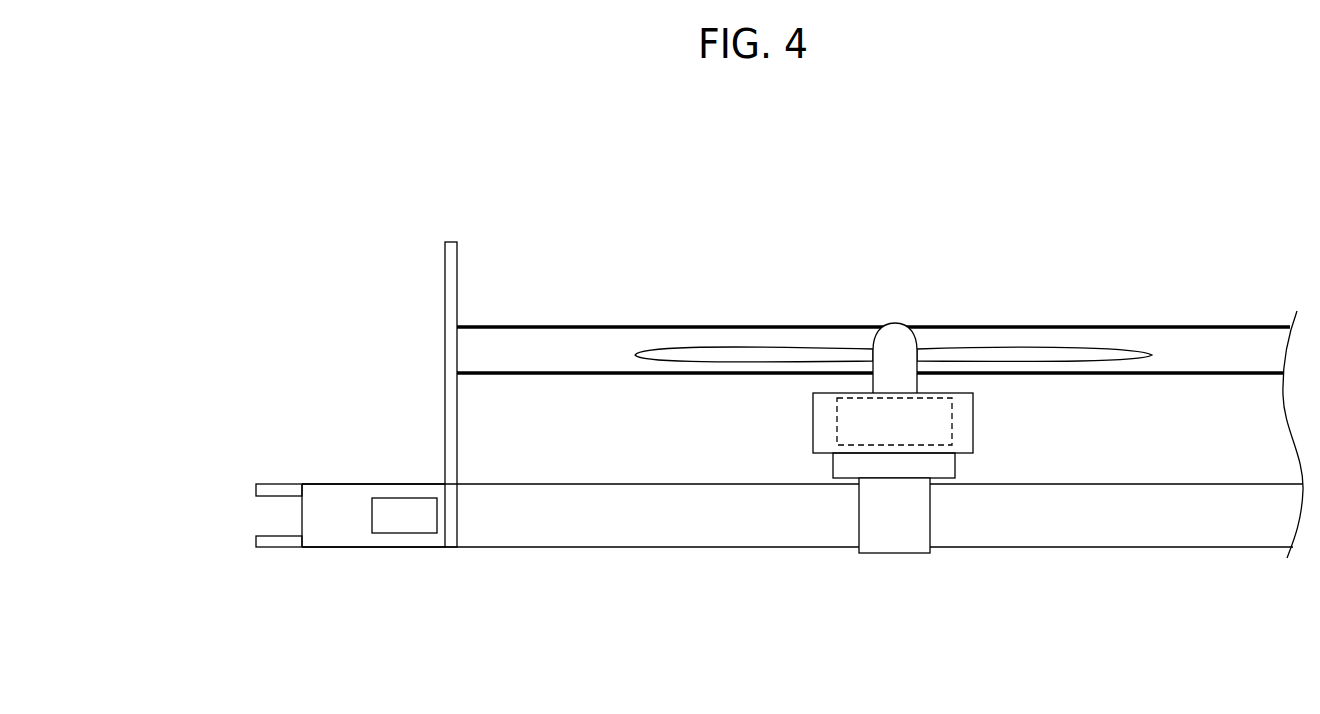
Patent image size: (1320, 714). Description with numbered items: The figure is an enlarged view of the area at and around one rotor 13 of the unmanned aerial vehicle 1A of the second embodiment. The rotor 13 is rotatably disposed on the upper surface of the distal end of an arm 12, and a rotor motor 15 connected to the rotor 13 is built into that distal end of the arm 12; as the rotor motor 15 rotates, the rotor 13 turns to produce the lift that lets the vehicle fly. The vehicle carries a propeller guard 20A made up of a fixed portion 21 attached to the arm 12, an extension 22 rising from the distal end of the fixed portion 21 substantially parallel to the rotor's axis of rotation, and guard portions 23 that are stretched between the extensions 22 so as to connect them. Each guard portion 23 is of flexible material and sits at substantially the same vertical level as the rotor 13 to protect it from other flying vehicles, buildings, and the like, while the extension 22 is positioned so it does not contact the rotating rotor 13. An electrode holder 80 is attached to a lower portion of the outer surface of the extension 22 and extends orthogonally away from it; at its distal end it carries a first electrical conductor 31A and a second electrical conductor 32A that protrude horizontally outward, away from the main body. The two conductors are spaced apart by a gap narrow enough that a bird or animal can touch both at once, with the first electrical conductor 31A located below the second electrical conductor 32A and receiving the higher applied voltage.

The unmanned aerial vehicle 1A is at (1153, 160).
The propeller guard 20A is at (426, 272).
The extension 22 is at (452, 404).
The guard portion 23 is at (520, 342).
The rotor 13 is at (703, 360).
The rotor motor 15 is at (953, 425).
The fixed portion 21 is at (720, 530).
The arm 12 is at (1100, 530).
The electrode holder 80 is at (352, 532).
The second electrical conductor 32A is at (256, 492).
The first electrical conductor 31A is at (256, 542).